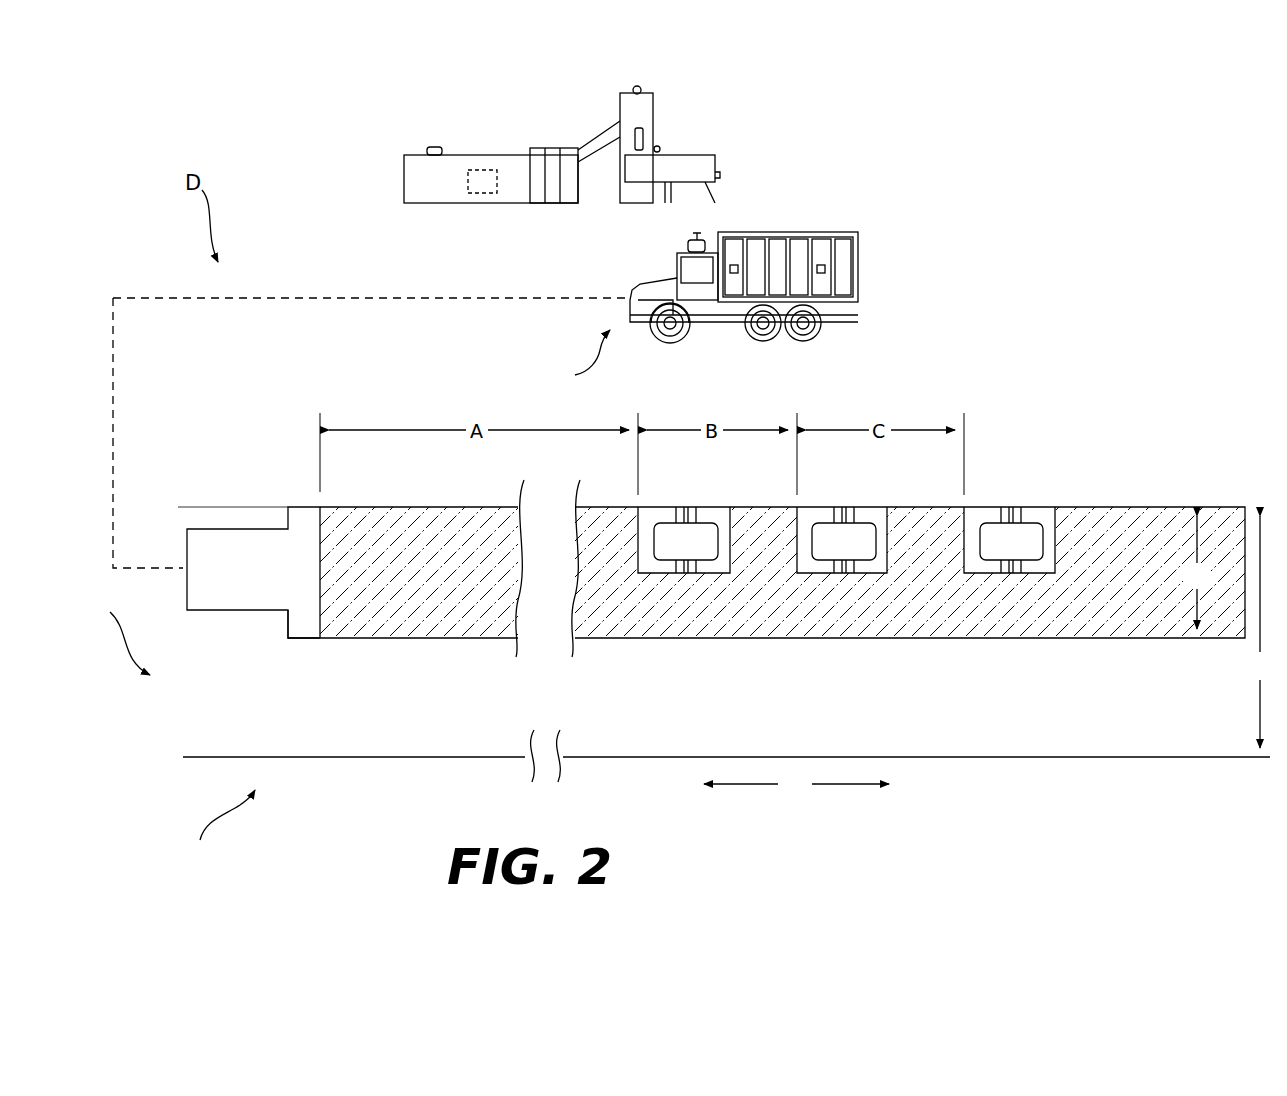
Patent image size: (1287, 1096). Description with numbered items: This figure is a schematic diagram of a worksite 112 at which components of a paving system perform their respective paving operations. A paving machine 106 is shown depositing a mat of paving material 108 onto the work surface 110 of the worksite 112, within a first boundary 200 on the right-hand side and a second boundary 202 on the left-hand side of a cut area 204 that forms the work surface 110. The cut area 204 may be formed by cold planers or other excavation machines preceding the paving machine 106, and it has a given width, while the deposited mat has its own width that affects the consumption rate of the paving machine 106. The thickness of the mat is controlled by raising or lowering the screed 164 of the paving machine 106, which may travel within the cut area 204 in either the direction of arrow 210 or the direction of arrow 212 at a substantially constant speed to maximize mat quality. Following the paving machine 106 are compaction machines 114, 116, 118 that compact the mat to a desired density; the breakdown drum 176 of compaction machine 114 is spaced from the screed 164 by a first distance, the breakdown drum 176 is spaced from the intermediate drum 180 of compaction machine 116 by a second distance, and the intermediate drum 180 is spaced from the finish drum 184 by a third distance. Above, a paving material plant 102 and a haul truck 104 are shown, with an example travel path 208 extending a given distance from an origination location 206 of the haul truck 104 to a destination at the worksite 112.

The paving material plant 102 is at (535, 110).
The haul truck 104 is at (872, 254).
The paving machine 106 is at (235, 528).
The paving material 108 is at (430, 640).
The work surface 110 is at (240, 715).
The worksite 112 is at (219, 830).
The compaction machine 114 is at (682, 520).
The compaction machine 116 is at (841, 520).
The compaction machine 118 is at (1008, 520).
The screed 164 is at (302, 640).
The breakdown drum 176 is at (638, 527).
The intermediate drum 180 is at (797, 527).
The finish drum 184 is at (964, 527).
The first boundary 200 is at (1160, 506).
The second boundary 202 is at (1113, 759).
The cut area 204 is at (112, 635).
The origination location 206 is at (574, 358).
The travel path 208 is at (114, 350).
The arrow 210 is at (745, 786).
The arrow 212 is at (853, 786).